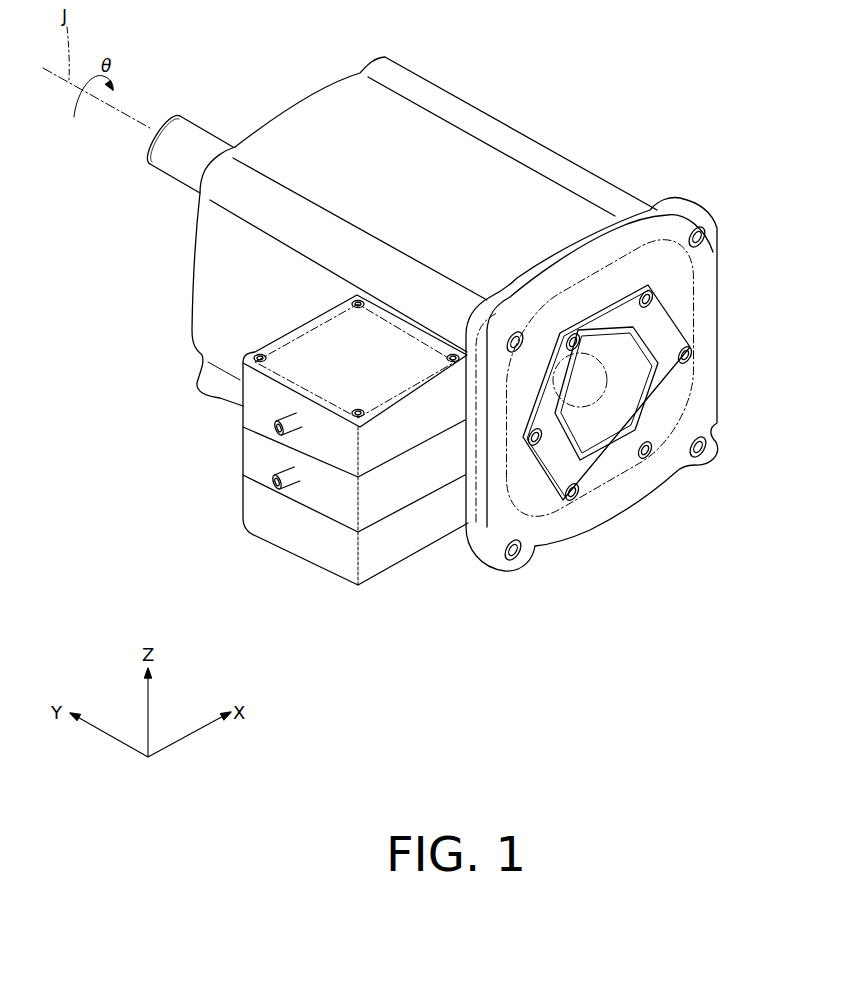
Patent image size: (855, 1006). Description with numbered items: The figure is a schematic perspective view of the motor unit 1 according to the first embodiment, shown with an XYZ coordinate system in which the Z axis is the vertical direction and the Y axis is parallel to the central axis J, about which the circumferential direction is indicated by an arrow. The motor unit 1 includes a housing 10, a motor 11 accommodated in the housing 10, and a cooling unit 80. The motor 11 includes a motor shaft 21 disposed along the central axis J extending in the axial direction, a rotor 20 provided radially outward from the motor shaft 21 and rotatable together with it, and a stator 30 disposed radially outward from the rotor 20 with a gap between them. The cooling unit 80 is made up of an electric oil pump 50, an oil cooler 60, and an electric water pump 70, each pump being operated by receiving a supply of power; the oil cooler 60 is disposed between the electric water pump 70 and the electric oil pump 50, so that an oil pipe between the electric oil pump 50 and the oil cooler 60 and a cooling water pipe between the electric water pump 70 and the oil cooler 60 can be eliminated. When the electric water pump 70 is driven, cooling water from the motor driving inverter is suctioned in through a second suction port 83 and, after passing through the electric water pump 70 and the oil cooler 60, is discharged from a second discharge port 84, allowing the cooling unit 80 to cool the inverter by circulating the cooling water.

The motor unit 1 is at (575, 75).
The housing 10 is at (577, 173).
The motor 11 is at (631, 472).
The rotor 20 is at (522, 445).
The motor shaft 21 is at (208, 137).
The stator 30 is at (687, 298).
The electric oil pump 50 is at (408, 537).
The oil cooler 60 is at (338, 505).
The electric water pump 70 is at (327, 440).
The cooling unit 80 is at (230, 427).
The second suction port 83 is at (276, 421).
The second discharge port 84 is at (274, 476).